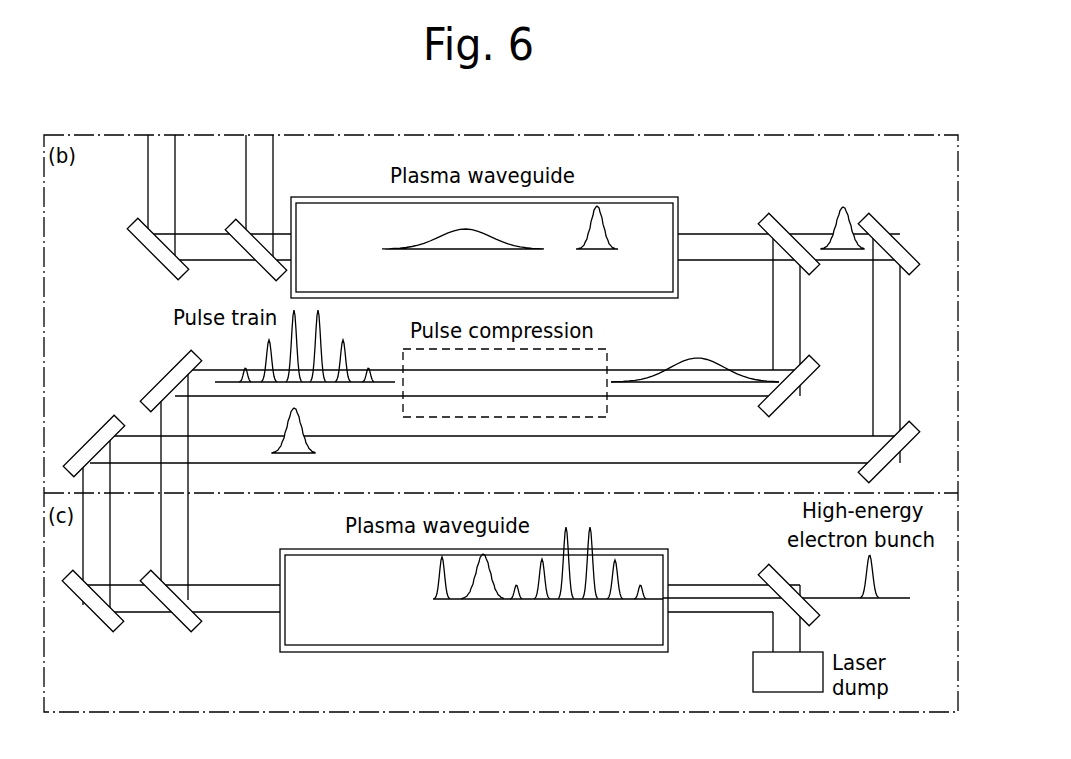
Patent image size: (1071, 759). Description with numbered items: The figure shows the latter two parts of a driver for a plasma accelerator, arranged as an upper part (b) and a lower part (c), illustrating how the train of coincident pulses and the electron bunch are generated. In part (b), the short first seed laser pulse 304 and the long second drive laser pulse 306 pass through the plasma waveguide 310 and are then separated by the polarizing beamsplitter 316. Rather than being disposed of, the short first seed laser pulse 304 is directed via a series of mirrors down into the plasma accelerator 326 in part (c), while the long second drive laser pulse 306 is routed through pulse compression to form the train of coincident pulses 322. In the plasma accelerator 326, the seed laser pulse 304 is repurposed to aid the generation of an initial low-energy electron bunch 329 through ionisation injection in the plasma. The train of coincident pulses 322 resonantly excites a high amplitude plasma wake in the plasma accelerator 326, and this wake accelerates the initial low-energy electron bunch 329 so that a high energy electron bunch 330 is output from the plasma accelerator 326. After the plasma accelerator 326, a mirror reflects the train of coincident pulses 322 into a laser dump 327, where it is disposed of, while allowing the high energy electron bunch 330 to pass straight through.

The plasma waveguide 310 is at (318, 217).
The polarizing beamsplitter 316 is at (770, 215).
The short first seed laser pulse 304 is at (845, 210).
The long second drive laser pulse 306 is at (705, 355).
The train of coincident pulses 322 is at (593, 560).
The plasma accelerator 326 is at (301, 633).
The initial low-energy electron bunch 329 is at (441, 600).
The high energy electron bunch 330 is at (880, 568).
The laser dump 327 is at (753, 680).